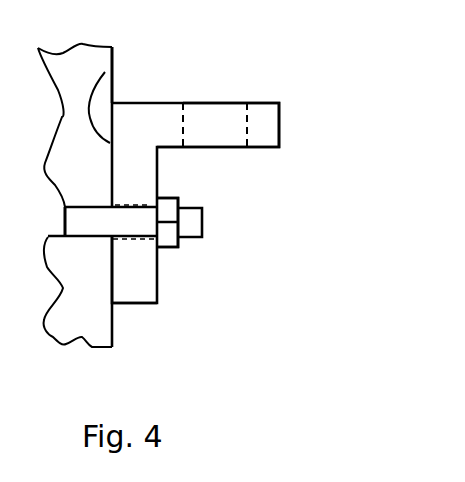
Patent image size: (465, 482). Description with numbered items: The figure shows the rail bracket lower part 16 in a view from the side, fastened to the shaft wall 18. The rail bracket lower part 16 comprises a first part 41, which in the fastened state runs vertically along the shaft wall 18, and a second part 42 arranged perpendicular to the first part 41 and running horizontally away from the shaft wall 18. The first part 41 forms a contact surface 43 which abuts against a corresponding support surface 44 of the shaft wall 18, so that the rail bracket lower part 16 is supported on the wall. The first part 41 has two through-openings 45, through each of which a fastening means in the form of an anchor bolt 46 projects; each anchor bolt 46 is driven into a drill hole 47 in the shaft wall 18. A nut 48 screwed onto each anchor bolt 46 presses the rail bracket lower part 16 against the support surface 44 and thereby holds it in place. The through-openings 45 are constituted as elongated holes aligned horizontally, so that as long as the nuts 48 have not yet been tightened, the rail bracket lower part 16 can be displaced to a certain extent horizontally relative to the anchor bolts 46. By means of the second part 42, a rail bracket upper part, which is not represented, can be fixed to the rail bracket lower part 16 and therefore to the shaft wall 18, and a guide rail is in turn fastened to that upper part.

The rail bracket lower part 16 is at (197, 88).
The shaft wall 18 is at (87, 70).
The first part 41 is at (148, 290).
The second part 42 is at (268, 102).
The contact surface 43 is at (105, 72).
The support surface 44 is at (113, 277).
The through-opening 45 is at (150, 203).
The anchor bolt 46 is at (202, 223).
The drill hole 47 is at (73, 205).
The nut 48 is at (170, 248).